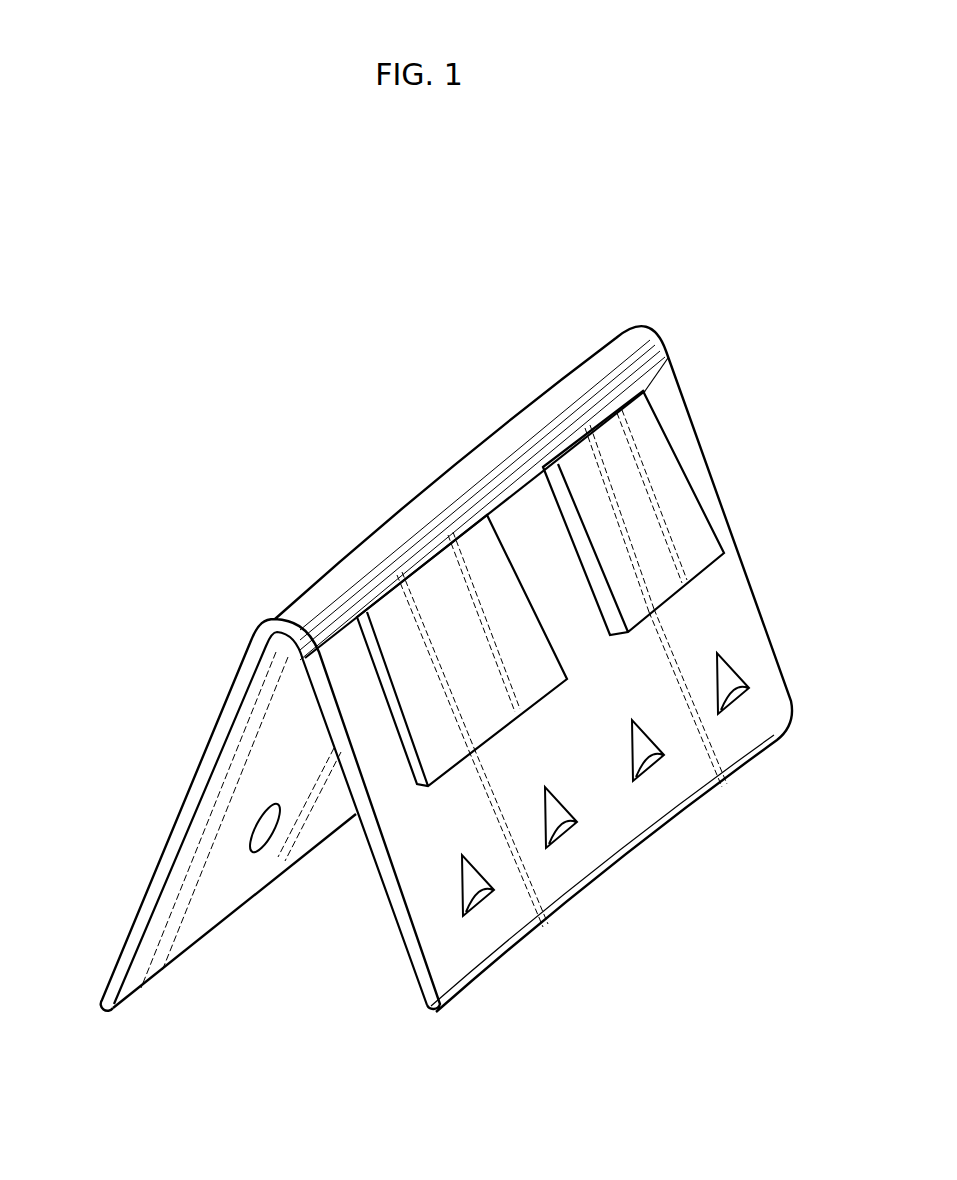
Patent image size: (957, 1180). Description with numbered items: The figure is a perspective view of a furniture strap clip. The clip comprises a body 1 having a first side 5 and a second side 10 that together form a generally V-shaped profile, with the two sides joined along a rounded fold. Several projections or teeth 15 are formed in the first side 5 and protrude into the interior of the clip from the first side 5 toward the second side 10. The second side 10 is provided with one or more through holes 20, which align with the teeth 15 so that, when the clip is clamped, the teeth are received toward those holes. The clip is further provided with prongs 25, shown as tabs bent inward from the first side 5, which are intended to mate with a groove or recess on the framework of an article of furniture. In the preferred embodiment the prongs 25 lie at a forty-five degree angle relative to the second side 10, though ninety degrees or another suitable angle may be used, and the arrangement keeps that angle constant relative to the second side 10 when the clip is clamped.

The body 1 is at (624, 308).
The first side 5 is at (735, 595).
The second side 10 is at (206, 753).
The teeth 15 is at (470, 888).
The through holes 20 is at (270, 822).
The prongs 25 is at (670, 520).